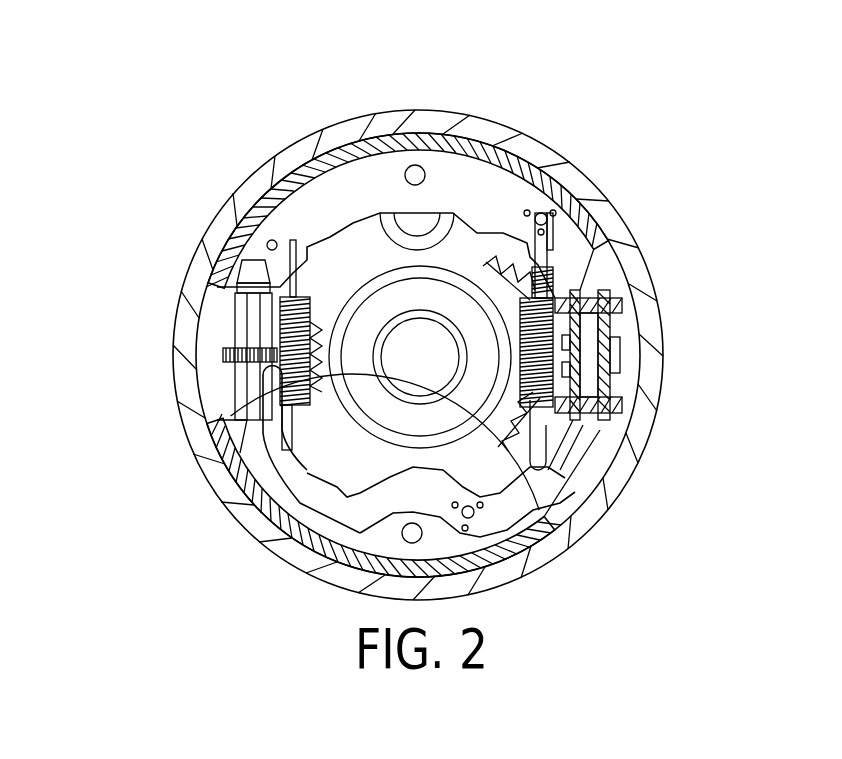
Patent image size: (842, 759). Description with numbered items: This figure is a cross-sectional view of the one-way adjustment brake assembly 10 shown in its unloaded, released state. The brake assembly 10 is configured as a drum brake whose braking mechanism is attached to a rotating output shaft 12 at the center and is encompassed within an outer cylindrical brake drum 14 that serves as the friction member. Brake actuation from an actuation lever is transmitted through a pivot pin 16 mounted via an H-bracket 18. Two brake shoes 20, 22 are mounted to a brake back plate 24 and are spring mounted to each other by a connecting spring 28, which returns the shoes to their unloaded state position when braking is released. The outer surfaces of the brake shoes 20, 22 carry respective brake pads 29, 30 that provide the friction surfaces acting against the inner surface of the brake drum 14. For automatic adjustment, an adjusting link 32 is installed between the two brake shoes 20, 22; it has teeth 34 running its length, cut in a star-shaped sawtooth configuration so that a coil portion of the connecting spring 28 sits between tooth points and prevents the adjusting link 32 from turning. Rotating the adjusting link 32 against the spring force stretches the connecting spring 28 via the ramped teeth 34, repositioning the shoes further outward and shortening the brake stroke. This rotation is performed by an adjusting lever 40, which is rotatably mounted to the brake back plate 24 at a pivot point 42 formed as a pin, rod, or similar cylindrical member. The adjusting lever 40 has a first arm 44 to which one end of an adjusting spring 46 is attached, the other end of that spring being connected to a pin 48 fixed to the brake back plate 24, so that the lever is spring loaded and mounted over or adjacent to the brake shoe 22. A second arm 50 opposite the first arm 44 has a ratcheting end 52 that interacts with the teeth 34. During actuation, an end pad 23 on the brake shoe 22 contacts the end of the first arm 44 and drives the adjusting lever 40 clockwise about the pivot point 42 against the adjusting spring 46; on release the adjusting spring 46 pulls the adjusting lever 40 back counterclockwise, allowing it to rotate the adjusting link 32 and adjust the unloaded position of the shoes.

The brake assembly 10 is at (153, 153).
The output shaft 12 is at (417, 337).
The brake drum 14 is at (190, 268).
The pivot pin 16 is at (620, 357).
The H-bracket 18 is at (570, 287).
The brake shoe 20 is at (347, 193).
The brake shoe 22 is at (382, 548).
The end pad 23 is at (620, 407).
The brake back plate 24 is at (468, 242).
The connecting spring 28 is at (270, 240).
The brake pad 29 is at (452, 143).
The brake pad 30 is at (265, 507).
The adjusting link 32 is at (223, 357).
The teeth 34 is at (262, 375).
The adjusting lever 40 is at (507, 510).
The pivot point 42 is at (465, 528).
The first arm 44 is at (573, 440).
The adjusting spring 46 is at (563, 282).
The pin 48 is at (537, 213).
The second arm 50 is at (243, 443).
The ratcheting end 52 is at (273, 378).